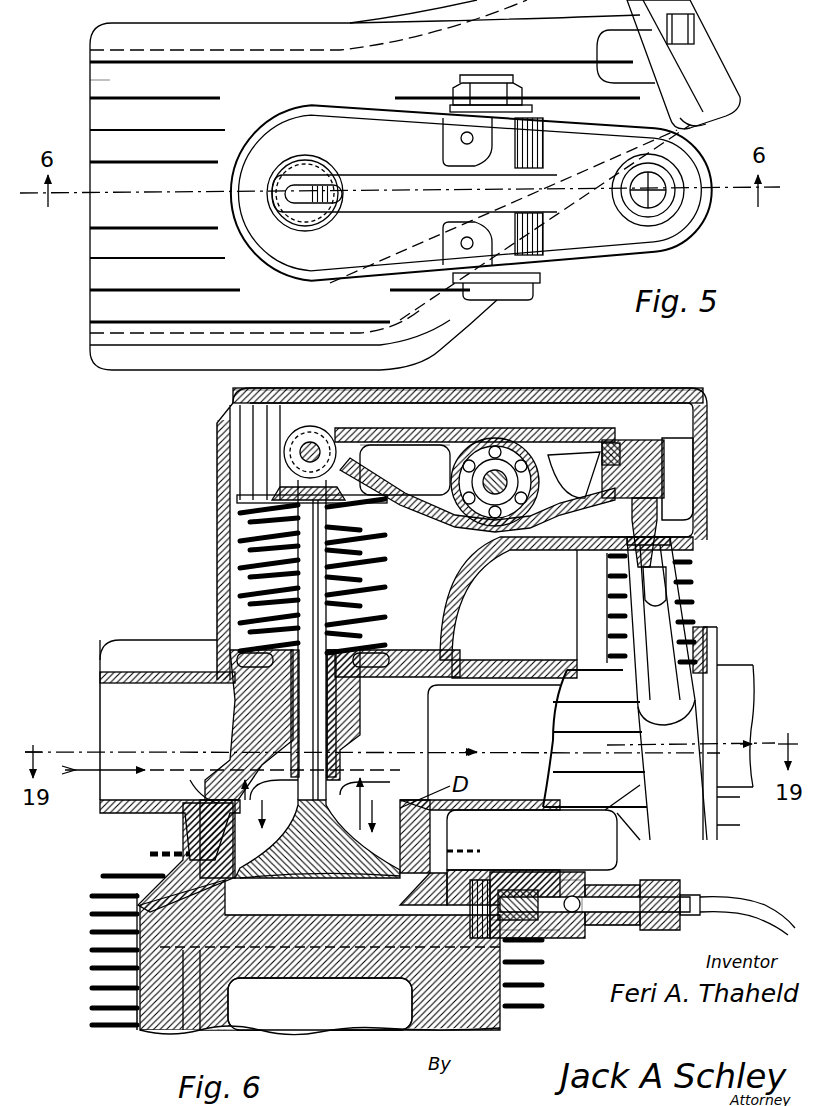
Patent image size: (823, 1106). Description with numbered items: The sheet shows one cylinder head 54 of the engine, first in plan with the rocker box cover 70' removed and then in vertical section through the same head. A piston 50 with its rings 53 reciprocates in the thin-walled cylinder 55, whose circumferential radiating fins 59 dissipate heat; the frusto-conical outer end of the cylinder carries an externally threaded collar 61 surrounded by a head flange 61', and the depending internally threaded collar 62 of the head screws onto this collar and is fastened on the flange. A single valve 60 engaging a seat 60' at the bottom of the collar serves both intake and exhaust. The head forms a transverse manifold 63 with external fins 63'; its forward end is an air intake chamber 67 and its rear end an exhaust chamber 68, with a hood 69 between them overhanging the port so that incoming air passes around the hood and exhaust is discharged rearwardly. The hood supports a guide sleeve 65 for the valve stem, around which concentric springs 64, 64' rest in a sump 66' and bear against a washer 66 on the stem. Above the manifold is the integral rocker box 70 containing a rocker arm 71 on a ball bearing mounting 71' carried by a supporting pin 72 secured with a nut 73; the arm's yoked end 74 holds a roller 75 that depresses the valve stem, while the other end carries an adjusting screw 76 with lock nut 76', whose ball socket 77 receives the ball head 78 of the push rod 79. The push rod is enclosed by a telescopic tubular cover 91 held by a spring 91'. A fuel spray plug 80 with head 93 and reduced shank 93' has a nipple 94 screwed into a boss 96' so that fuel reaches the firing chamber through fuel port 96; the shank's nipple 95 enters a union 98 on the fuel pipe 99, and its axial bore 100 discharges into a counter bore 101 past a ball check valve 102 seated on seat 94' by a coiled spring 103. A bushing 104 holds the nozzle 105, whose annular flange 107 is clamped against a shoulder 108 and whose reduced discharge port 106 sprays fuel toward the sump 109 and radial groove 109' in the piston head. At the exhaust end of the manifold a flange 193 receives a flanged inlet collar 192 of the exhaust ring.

In FIG. 6, the piston 50 is at (162, 1043).
In FIG. 6, the rings 53 is at (137, 978).
In FIG. 5, the cylinder head 54 is at (145, 362).
In FIG. 6, the cylinder head 54 is at (216, 516).
In FIG. 6, the cylinder 55 is at (140, 1032).
In FIG. 6, the radiating fins 59 is at (92, 934).
In FIG. 6, the valve 60 is at (302, 699).
In FIG. 6, the valve seat 60' is at (315, 859).
In FIG. 6, the externally threaded collar 61 is at (520, 845).
In FIG. 6, the head flange 61' is at (146, 853).
In FIG. 6, the internally screw-threaded collar 62 is at (196, 830).
In FIG. 5, the manifold 63 is at (75, 80).
In FIG. 6, the manifold 63 is at (141, 720).
In FIG. 5, the radiating fins 63' is at (75, 271).
In FIG. 6, the radiating fins 63' is at (147, 641).
In FIG. 6, the valve spring 64 is at (282, 576).
In FIG. 6, the valve spring 64' is at (270, 577).
In FIG. 6, the guide sleeve 65 is at (352, 626).
In FIG. 6, the washer 66 is at (282, 485).
In FIG. 6, the sump 66' is at (335, 645).
In FIG. 6, the air intake chamber 67 is at (140, 723).
In FIG. 6, the exhaust chamber 68 is at (500, 692).
In FIG. 6, the hood 69 is at (410, 707).
In FIG. 5, the rocker box 70 is at (457, 212).
In FIG. 6, the rocker box 70 is at (436, 534).
In FIG. 6, the cover 70' is at (466, 373).
In FIG. 5, the rocker arm 71 is at (414, 179).
In FIG. 6, the rocker arm 71 is at (405, 422).
In FIG. 6, the ball bearing mounting 71' is at (521, 467).
In FIG. 5, the supporting pin 72 is at (531, 298).
In FIG. 6, the supporting pin 72 is at (475, 493).
In FIG. 5, the nut 73 is at (514, 92).
In FIG. 5, the yoked end 74 is at (310, 208).
In FIG. 6, the yoked end 74 is at (322, 436).
In FIG. 5, the roller 75 is at (278, 188).
In FIG. 6, the roller 75 is at (300, 442).
In FIG. 5, the adjusting screw 76 is at (654, 189).
In FIG. 6, the adjusting screw 76 is at (653, 479).
In FIG. 5, the lock nut 76' is at (666, 201).
In FIG. 6, the lock nut 76' is at (669, 464).
In FIG. 6, the ball socket 77 is at (668, 508).
In FIG. 6, the ball head 78 is at (632, 522).
In FIG. 6, the push rod 79 is at (700, 622).
In FIG. 6, the fuel spray plug 80 is at (612, 896).
In FIG. 6, the telescopic tubular cover 91 is at (691, 699).
In FIG. 6, the spring 91' is at (602, 590).
In FIG. 6, the head 93 is at (590, 888).
In FIG. 6, the reduced shank 93' is at (627, 939).
In FIG. 6, the screw threaded nipple 94 is at (563, 870).
In FIG. 6, the seat 94' is at (619, 877).
In FIG. 6, the screw threaded nipple 95 is at (660, 893).
In FIG. 6, the fuel port 96 is at (517, 874).
In FIG. 6, the boss 96' is at (520, 879).
In FIG. 6, the union 98 is at (688, 893).
In FIG. 6, the fuel pipe 99 is at (757, 910).
In FIG. 6, the axial bore 100 is at (622, 928).
In FIG. 6, the counter bore 101 is at (580, 872).
In FIG. 6, the ball check valve 102 is at (590, 926).
In FIG. 6, the coiled spring 103 is at (575, 935).
In FIG. 6, the bushing 104 is at (515, 938).
In FIG. 6, the nozzle 105 is at (556, 940).
In FIG. 6, the reduced discharge port 106 is at (480, 916).
In FIG. 6, the annular flange 107 is at (552, 896).
In FIG. 6, the shoulder 108 is at (540, 940).
In FIG. 6, the sump 109 is at (320, 972).
In FIG. 6, the radial groove 109' is at (362, 892).
In FIG. 5, the flanged inlet collar 192 is at (712, 44).
In FIG. 5, the flange 193 is at (690, 127).